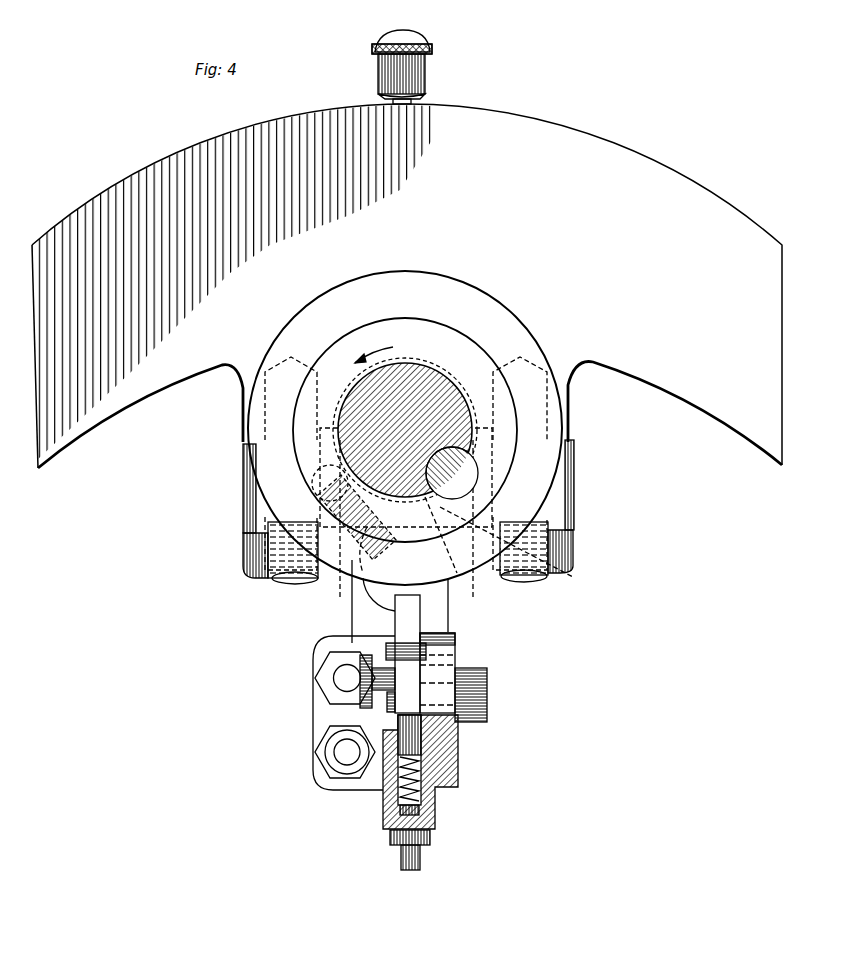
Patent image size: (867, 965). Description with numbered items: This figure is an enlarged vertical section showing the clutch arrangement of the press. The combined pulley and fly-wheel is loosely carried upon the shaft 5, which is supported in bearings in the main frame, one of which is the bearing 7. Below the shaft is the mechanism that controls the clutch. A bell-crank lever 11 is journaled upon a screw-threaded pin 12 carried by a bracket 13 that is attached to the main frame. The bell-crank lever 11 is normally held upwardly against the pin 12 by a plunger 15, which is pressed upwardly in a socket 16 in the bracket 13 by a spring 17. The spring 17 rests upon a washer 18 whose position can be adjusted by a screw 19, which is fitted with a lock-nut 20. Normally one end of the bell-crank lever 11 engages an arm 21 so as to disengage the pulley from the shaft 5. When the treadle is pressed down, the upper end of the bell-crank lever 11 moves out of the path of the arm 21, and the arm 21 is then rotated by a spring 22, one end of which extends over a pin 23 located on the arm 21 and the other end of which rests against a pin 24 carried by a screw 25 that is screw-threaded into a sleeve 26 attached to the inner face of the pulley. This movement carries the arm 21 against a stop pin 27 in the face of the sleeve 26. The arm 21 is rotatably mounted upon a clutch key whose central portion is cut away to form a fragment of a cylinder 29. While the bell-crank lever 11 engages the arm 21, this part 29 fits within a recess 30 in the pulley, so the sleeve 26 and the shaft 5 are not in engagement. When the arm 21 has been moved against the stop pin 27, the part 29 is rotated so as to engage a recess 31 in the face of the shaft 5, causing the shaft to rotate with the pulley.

The bearing 7 is at (690, 197).
The recess 31 is at (443, 450).
The shaft 5 is at (410, 380).
The screw 25 is at (333, 487).
The sleeve 26 is at (553, 460).
The fragment of a cylinder 29 is at (470, 470).
The stop pin 27 is at (510, 497).
The pin 24 is at (303, 582).
The spring 22 is at (352, 572).
The arm 21 is at (375, 597).
The bell-crank lever 11 is at (410, 618).
The recess 30 is at (527, 585).
The pin 23 is at (452, 585).
The screw-threaded pin 12 is at (385, 707).
The plunger 15 is at (425, 748).
The bracket 13 is at (345, 790).
The socket 16 is at (392, 810).
The spring 17 is at (440, 792).
The washer 18 is at (437, 812).
The screw 19 is at (415, 868).
The lock-nut 20 is at (395, 842).